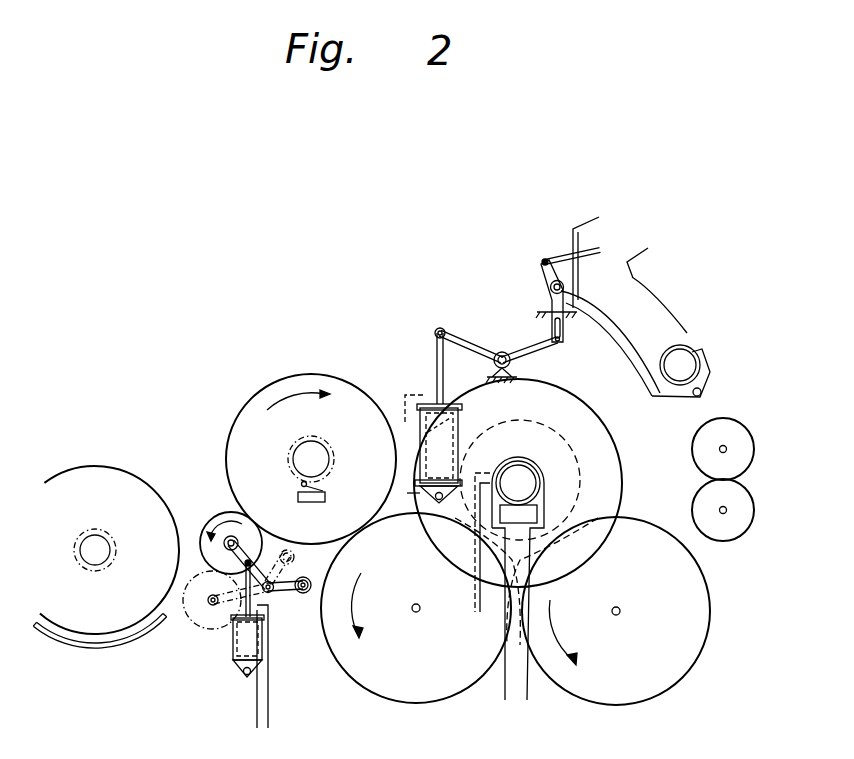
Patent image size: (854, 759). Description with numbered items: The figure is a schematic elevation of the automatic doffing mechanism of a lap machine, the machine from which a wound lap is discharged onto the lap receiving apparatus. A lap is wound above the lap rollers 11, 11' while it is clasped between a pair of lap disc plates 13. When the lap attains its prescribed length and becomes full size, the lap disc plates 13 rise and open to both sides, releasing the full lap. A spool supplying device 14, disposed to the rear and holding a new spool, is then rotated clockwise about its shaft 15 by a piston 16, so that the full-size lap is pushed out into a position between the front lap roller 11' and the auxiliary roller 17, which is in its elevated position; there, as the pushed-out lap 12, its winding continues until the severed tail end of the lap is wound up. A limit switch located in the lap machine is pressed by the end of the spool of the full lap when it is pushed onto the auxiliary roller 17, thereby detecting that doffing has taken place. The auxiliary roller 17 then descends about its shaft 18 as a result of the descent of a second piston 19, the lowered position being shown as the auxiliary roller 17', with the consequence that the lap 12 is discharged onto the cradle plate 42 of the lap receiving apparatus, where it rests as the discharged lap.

The lap roller 11 is at (465, 541).
The lap roller 11' is at (637, 611).
The roll 12 is at (242, 428).
The lap disc plates 13 is at (88, 472).
The spool supplying device 14 is at (622, 328).
The shaft 15 is at (548, 287).
The piston 16 is at (425, 403).
The auxiliary roller 17 is at (221, 524).
The auxiliary roller 17' is at (199, 619).
The shaft 18 is at (279, 596).
The piston 19 is at (233, 632).
The cradle plate 42 is at (88, 646).